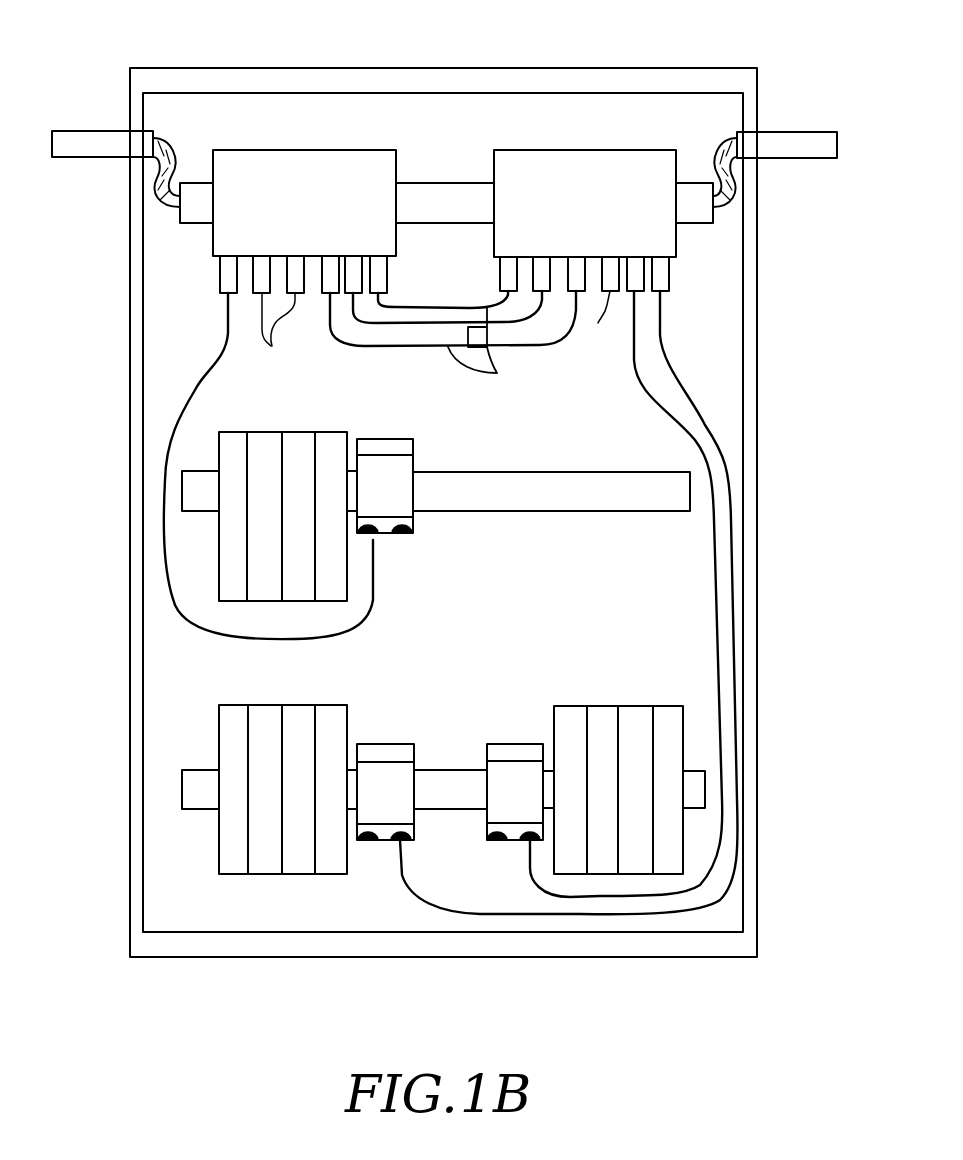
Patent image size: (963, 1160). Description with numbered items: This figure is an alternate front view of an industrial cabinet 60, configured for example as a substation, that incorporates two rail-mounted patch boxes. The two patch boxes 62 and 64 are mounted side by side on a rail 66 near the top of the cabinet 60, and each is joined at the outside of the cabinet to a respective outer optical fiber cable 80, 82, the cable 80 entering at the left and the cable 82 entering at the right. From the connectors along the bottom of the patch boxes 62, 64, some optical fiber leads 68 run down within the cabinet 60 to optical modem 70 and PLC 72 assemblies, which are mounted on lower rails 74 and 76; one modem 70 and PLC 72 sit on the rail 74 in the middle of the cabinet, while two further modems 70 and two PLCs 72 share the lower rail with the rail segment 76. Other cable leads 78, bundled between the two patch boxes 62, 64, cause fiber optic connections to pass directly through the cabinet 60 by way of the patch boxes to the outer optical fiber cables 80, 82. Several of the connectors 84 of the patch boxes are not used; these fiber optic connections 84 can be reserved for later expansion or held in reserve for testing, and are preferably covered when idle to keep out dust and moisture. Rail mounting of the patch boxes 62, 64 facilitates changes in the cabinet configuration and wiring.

The cabinet 60 is at (757, 347).
The patch box 62 is at (314, 150).
The patch box 64 is at (585, 150).
The rail 66 is at (441, 183).
The optical fiber leads 68 is at (716, 402).
The optical modem 70 is at (396, 422).
The PLC 72 is at (330, 432).
The rail 74 is at (578, 511).
The rail 76 is at (697, 771).
The cable leads 78 is at (489, 347).
The outer optical fiber cable 80 is at (84, 92).
The outer optical fiber cable 82 is at (810, 132).
The connectors 84 is at (436, 329).